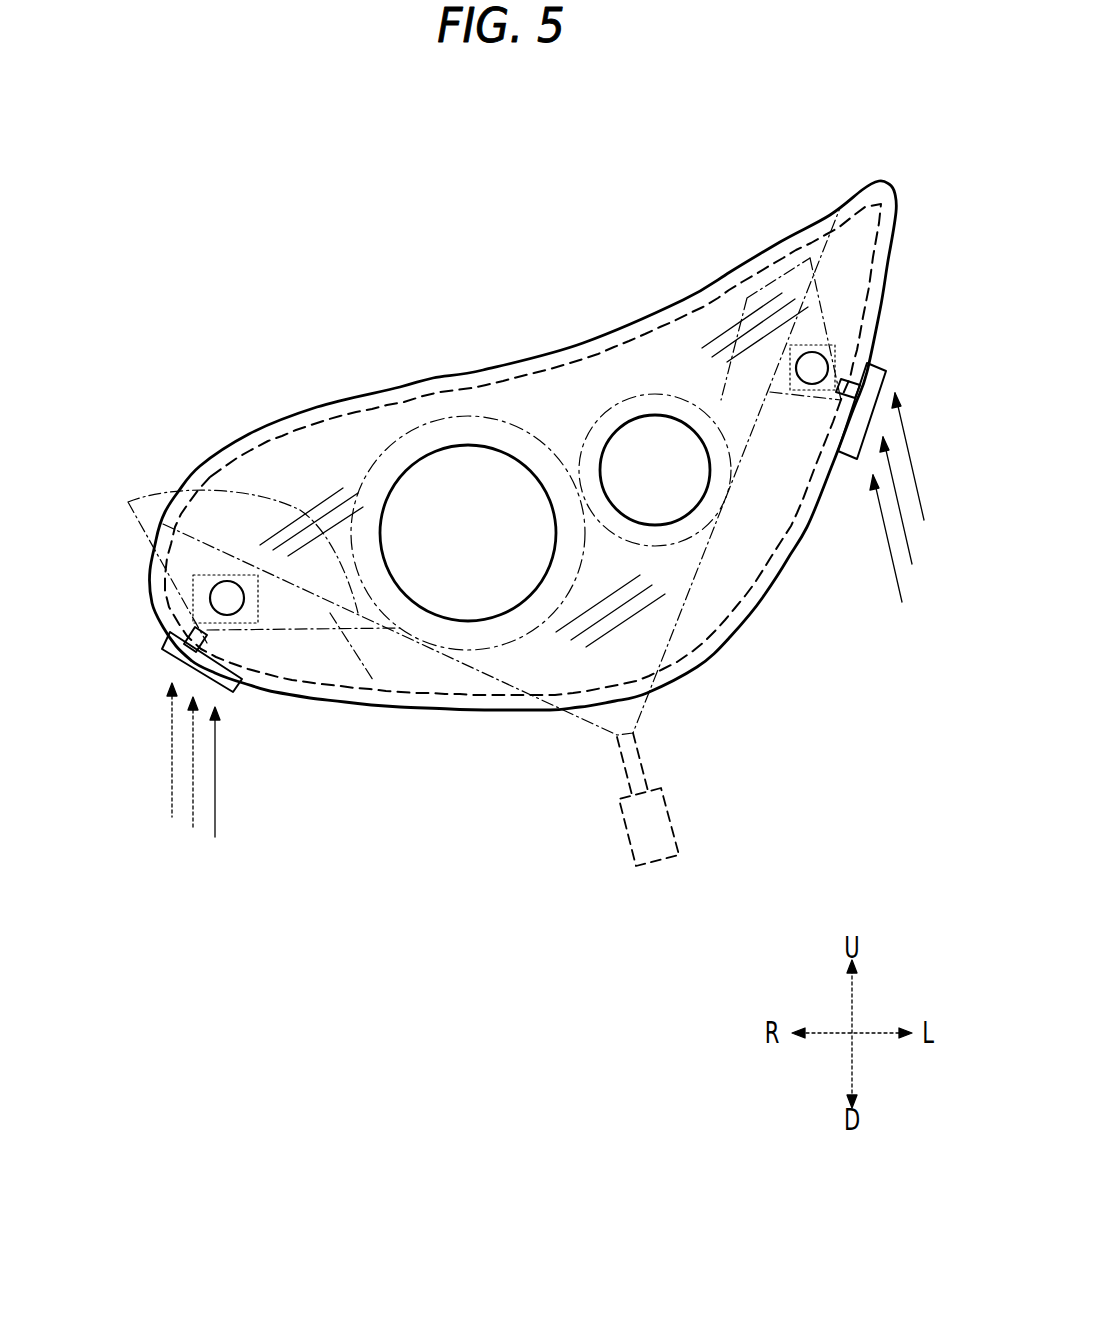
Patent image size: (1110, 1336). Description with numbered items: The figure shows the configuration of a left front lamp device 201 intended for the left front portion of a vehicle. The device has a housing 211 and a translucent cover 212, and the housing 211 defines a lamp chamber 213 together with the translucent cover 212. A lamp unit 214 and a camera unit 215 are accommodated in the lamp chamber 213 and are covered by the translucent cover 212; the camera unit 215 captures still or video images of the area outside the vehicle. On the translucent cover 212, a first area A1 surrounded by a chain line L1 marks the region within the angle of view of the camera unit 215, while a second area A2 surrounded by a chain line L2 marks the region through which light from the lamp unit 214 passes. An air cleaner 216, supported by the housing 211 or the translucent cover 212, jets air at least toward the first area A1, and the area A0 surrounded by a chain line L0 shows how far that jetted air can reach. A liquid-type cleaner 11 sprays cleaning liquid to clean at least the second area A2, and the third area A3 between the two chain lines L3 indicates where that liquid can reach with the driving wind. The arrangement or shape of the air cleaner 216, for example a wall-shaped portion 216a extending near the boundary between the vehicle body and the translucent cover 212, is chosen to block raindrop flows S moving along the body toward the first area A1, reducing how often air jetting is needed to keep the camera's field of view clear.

The left front lamp device 201 is at (512, 500).
The liquid-type cleaner 11 is at (668, 805).
The housing 211 is at (702, 668).
The translucent cover 212 is at (710, 625).
The lamp chamber 213 is at (758, 600).
The lamp unit 214 is at (470, 460).
The camera unit 215 is at (227, 598).
The air cleaner 216 is at (141, 639).
The wall-shaped portion 216a is at (240, 688).
The area A0 is at (788, 276).
The first area A1 is at (831, 342).
The second area A2 is at (437, 425).
The third area A3 is at (324, 440).
The chain line L0 is at (155, 495).
The chain line L1 is at (298, 612).
The chain line L2 is at (397, 440).
The chain lines L3 is at (470, 677).
The raindrop flows S is at (222, 792).